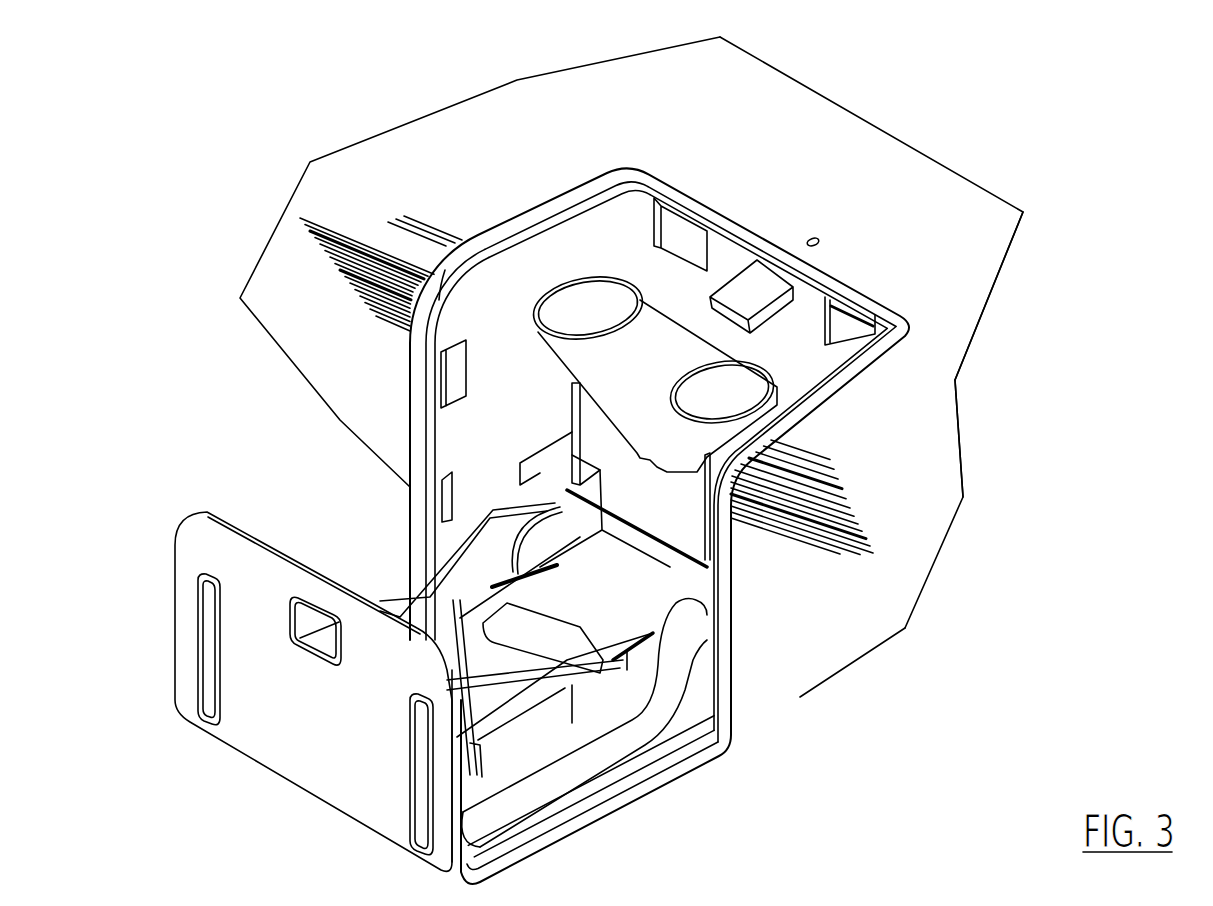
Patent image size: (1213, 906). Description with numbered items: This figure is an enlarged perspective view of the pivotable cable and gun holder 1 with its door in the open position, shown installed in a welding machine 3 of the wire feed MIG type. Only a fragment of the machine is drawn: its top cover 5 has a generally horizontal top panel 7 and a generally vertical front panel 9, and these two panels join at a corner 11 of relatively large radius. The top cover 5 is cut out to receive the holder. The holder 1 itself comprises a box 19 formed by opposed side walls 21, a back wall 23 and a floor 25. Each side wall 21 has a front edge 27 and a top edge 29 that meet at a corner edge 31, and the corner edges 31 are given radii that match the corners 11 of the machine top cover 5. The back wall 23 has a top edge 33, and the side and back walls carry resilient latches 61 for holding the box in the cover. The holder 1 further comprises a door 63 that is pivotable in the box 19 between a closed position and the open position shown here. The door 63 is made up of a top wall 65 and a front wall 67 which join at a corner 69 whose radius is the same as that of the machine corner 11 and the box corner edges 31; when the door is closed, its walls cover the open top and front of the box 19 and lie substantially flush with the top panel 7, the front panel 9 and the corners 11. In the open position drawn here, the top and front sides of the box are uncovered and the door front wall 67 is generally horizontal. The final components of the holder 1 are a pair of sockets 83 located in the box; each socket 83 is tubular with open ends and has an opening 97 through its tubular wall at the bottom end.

The pivotable cable and gun holder 1 is at (744, 697).
The welding machine 3 is at (1008, 294).
The top cover 5 is at (1009, 179).
The top panel 7 is at (932, 450).
The front panel 9 is at (868, 603).
The corner 11 is at (353, 255).
The box 19 is at (860, 255).
The side walls 21 is at (488, 285).
The back wall 23 is at (700, 297).
The floor 25 is at (698, 535).
The front edges 27 is at (407, 512).
The top edges 29 is at (538, 207).
The corner edges 31 is at (417, 285).
The top edge 33 is at (788, 242).
The resilient latches 61 is at (468, 393).
The door 63 is at (650, 804).
The top wall 65 is at (318, 745).
The front wall 67 is at (551, 815).
The corner 69 is at (448, 847).
The sockets 83 is at (646, 392).
The opening 97 is at (640, 457).